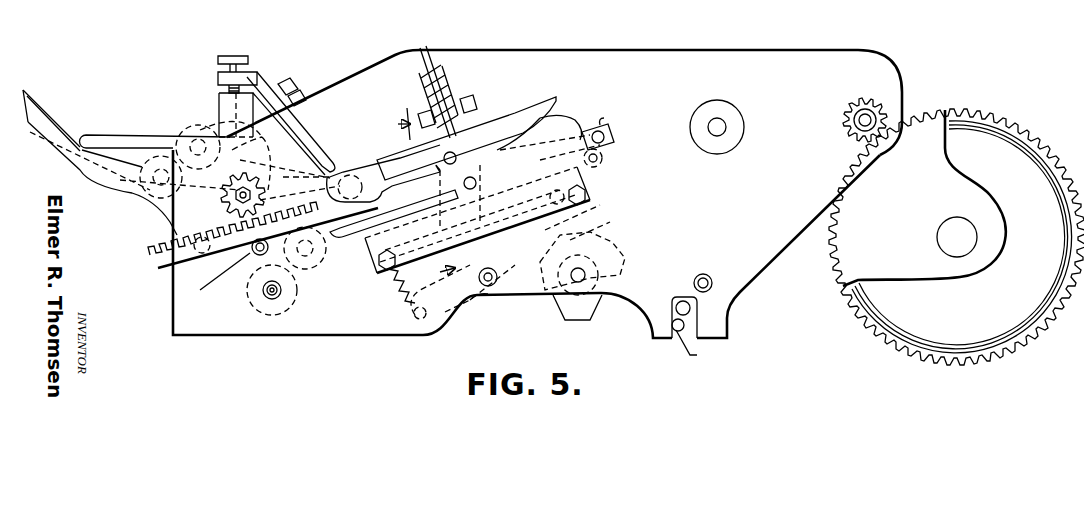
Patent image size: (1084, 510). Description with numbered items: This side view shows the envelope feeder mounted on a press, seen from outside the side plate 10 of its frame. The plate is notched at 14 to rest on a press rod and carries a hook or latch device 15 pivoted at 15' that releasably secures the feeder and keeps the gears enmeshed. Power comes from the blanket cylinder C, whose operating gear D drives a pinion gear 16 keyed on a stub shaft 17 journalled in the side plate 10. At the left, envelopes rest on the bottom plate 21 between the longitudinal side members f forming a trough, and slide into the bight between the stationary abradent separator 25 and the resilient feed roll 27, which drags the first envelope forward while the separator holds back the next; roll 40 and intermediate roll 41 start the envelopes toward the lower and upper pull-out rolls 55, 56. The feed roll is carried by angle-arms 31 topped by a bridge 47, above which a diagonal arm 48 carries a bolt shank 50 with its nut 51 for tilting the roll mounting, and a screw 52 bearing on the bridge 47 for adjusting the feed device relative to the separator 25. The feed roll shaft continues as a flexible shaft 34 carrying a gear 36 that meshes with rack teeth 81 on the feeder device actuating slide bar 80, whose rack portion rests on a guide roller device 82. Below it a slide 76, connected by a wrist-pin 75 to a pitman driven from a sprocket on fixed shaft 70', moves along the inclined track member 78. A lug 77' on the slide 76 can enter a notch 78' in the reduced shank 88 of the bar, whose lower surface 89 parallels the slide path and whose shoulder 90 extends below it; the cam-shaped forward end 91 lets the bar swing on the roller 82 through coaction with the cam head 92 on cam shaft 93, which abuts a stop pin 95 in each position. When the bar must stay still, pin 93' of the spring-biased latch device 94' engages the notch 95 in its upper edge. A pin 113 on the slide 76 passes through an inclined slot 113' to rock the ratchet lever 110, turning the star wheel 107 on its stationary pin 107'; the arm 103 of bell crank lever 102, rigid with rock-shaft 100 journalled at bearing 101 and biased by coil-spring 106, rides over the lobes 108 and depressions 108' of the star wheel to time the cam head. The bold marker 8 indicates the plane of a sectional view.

The side plate 10 is at (810, 50).
The longitudinal side member f is at (37, 97).
The bottom plate 21 is at (45, 142).
The roll 40 is at (145, 150).
The intermediate roll 41 is at (185, 133).
The angle-arms 31 is at (230, 108).
The bridge 47 is at (222, 90).
The screw 52 is at (234, 55).
The diagonal arm 48 is at (259, 72).
The nut 51 is at (285, 82).
The bolt shank 50 is at (299, 91).
The gear or pinion 36 is at (258, 187).
The feed or forwarding roll 27 is at (286, 176).
The flexible shaft 34 is at (232, 194).
The rack teeth 81 is at (150, 243).
The separator 25 is at (170, 273).
The guide roller device 82 is at (246, 254).
The lower pull-out rolls 55 is at (256, 306).
The upper pull-out rolls 56 is at (320, 270).
The inclined elongated slot 113' is at (393, 232).
The pin 113 is at (383, 153).
The notch 95 is at (398, 152).
The feeder device actuating slide bar 80 is at (417, 142).
The section line 8 is at (424, 202).
The lower surface 89 is at (425, 160).
The spring-biased latch device 94' is at (453, 82).
The pin 93' is at (459, 111).
The lug or projection 77' is at (518, 110).
The reduced shank 88 is at (516, 121).
The abutment wall or shoulder 90 is at (548, 115).
The inclined or cam-shaped forward end 91 is at (558, 122).
The notch 78' is at (550, 140).
The cam shaft 93 is at (614, 129).
The cam head 92 is at (604, 154).
The track member 78 is at (477, 220).
The slide 76 is at (412, 200).
The wrist-pin 75 is at (474, 190).
The ratchet lever 110 is at (575, 223).
The stationary pin or shaft 107' is at (592, 263).
The bearing 101 is at (494, 275).
The rock-shaft 100 is at (489, 297).
The bell crank lever 102 is at (447, 324).
The arm 103 is at (453, 320).
The contractile coil-spring 106 is at (395, 296).
The depressions 108' is at (562, 313).
The peripheral lobes 108 is at (577, 333).
The star or combined cam and ratchet wheel 107 is at (616, 314).
The notch 14 is at (672, 320).
The hook or latch device 15 is at (698, 330).
The pivot 15' is at (690, 289).
The fixed shaft 70' is at (728, 122).
The pinion gear 16 is at (865, 106).
The stub shaft 17 is at (878, 115).
The blanket cylinder C is at (956, 237).
The operating gear D is at (924, 198).